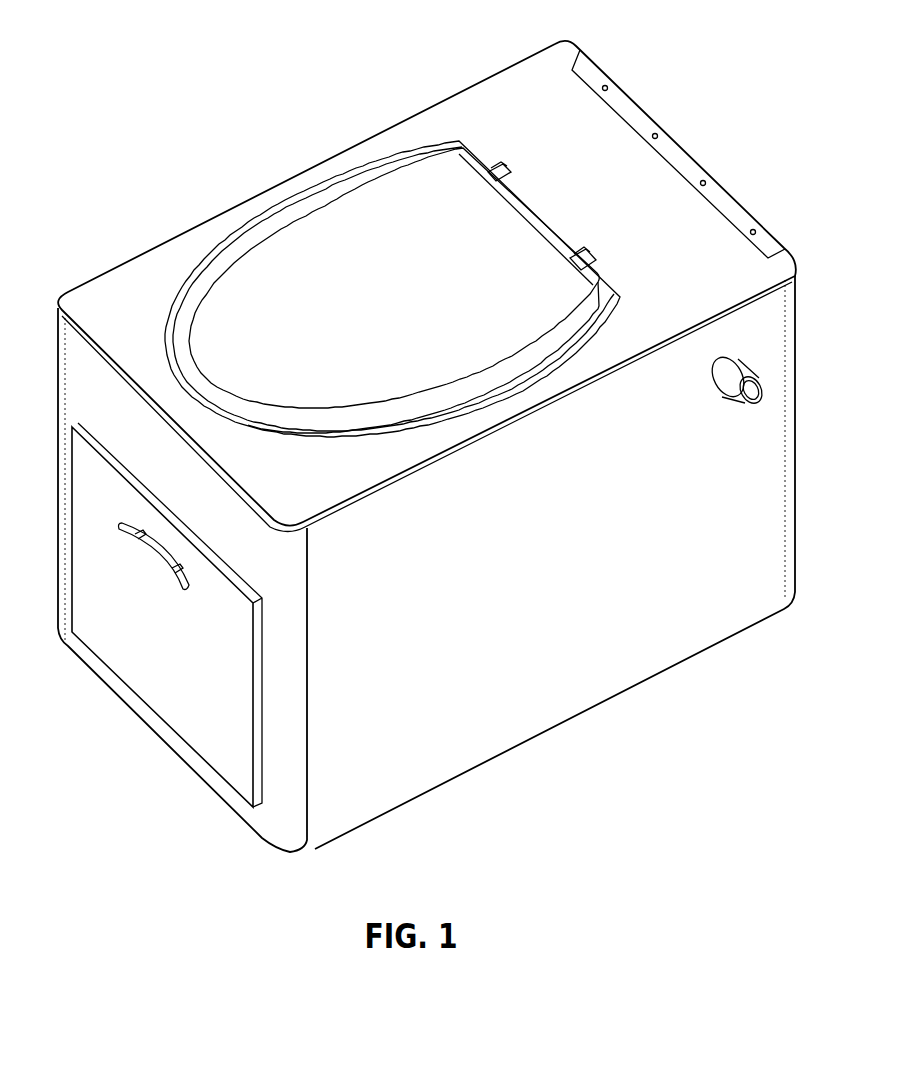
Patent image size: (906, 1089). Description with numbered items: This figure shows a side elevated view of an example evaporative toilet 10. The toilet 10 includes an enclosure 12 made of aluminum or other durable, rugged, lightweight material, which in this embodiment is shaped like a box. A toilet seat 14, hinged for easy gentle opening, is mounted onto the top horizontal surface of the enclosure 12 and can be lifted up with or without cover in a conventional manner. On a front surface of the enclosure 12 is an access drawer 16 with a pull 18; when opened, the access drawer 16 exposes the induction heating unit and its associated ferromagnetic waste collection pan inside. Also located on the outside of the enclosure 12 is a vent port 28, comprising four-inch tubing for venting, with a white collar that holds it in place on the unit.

The toilet 10 is at (413, 118).
The enclosure 12 is at (680, 665).
The toilet seat 14 is at (320, 314).
The access drawer 16 is at (208, 724).
The pull 18 is at (145, 571).
The vent port 28 is at (727, 386).